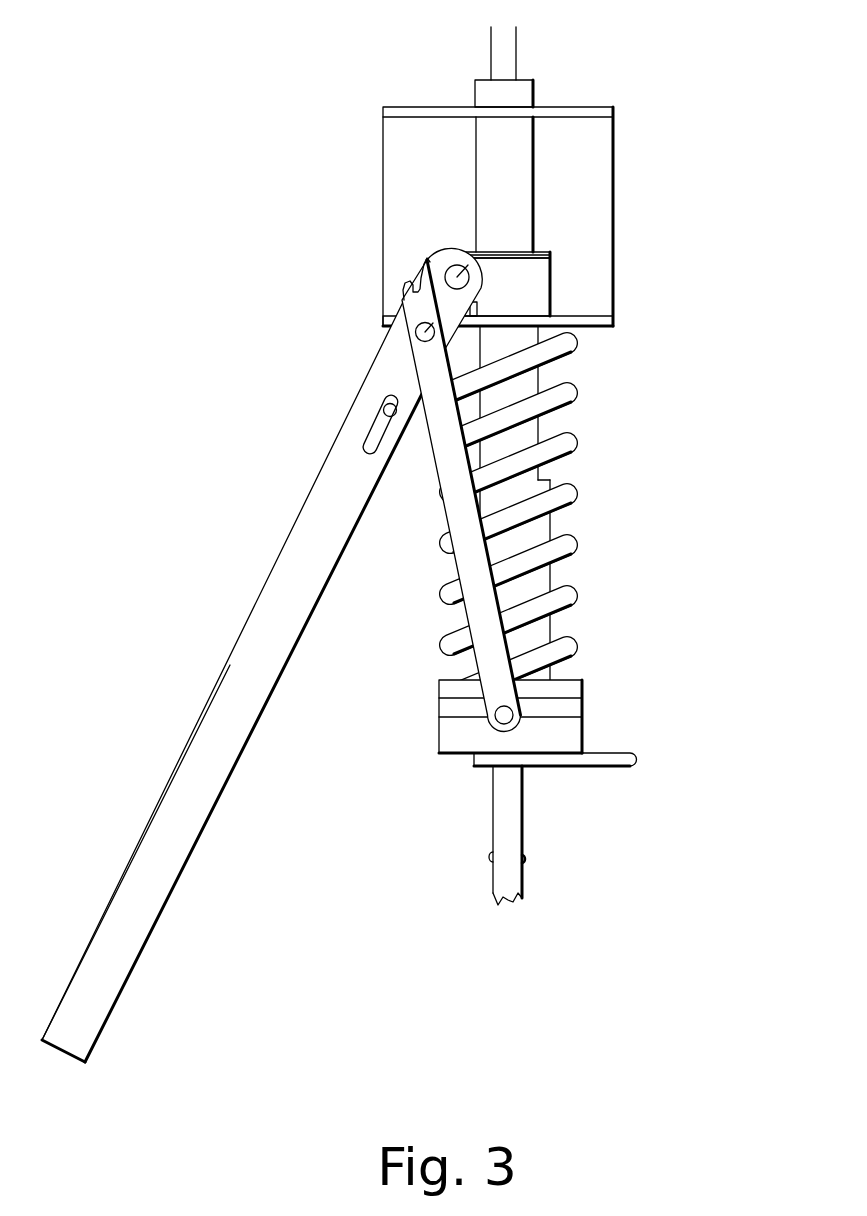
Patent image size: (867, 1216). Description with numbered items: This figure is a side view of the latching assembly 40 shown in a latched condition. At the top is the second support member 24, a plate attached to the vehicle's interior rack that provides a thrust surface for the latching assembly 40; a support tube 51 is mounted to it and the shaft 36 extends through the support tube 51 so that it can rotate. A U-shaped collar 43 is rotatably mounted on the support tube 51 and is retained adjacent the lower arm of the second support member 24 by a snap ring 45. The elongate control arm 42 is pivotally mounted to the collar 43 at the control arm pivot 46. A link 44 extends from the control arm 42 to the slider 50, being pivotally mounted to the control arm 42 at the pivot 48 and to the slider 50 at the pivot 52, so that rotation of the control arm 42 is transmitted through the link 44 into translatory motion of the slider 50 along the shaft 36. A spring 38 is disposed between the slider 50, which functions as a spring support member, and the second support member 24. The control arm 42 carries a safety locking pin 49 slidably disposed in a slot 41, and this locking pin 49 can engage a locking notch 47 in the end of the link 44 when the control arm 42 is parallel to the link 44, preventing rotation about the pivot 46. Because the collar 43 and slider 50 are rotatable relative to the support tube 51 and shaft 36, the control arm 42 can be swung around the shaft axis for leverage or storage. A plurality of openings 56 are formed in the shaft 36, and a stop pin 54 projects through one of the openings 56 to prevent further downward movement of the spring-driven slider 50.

The second support member 24 is at (422, 178).
The support tube 51 is at (520, 155).
The control arm pivot 46 is at (480, 252).
The snap ring 45 is at (553, 269).
The U-shaped collar 43 is at (553, 284).
The spring 38 is at (563, 495).
The slider 50 is at (455, 722).
The pin 54 is at (620, 760).
The shaft 36 is at (513, 845).
The openings 56 is at (497, 862).
The slot 41 is at (249, 681).
The control arm 42 is at (300, 578).
The safety locking pin 49 is at (383, 404).
The link 44 is at (446, 462).
The locking notch 47 is at (407, 302).
The pivot 48 is at (397, 348).
The pivot 52 is at (518, 717).
The latching assembly 40 is at (722, 558).